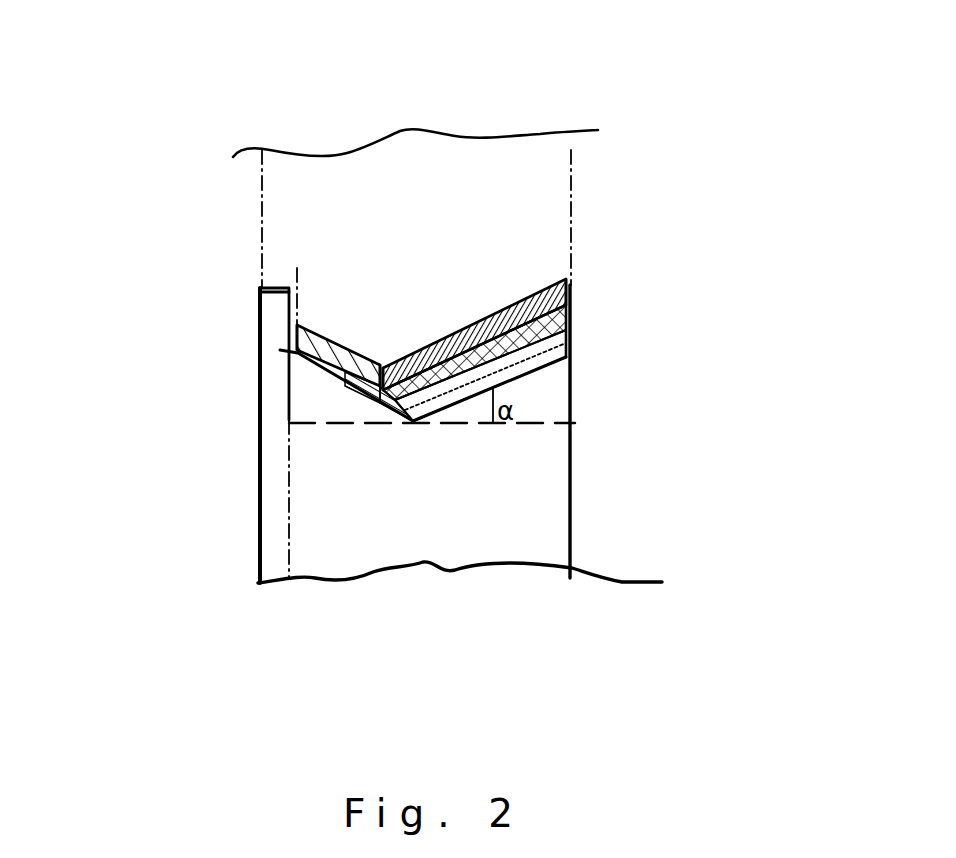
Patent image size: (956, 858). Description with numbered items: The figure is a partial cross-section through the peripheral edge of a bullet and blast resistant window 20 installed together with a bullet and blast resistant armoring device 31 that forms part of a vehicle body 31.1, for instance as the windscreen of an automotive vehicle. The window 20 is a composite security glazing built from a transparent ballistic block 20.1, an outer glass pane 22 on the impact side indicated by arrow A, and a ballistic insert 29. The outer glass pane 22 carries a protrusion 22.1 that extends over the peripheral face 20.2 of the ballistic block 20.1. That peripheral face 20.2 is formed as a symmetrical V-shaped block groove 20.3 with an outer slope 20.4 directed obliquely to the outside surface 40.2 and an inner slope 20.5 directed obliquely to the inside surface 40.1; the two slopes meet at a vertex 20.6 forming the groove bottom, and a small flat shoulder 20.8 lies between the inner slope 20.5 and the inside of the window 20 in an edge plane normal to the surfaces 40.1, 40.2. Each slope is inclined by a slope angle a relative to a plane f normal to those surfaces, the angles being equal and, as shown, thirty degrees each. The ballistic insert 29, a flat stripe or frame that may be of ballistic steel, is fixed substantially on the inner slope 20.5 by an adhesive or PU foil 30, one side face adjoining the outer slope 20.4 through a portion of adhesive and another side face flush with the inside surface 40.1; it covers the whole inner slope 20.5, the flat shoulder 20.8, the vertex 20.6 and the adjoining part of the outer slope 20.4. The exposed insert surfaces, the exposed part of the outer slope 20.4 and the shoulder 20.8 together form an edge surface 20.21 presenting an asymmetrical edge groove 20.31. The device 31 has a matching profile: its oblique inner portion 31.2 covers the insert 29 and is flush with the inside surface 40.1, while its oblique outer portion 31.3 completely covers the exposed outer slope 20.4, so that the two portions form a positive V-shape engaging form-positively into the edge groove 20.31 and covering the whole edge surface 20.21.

The bullet and blast resistant window 20 is at (318, 505).
The ballistic block 20.1 is at (515, 540).
The peripheral face 20.2 is at (527, 392).
The block groove 20.3 is at (417, 398).
The outer slope 20.4 is at (345, 395).
The inner slope 20.5 is at (472, 412).
The vertex 20.6 is at (408, 440).
The flat shoulder 20.8 is at (567, 331).
The edge surface 20.21 is at (485, 335).
The edge groove 20.31 is at (453, 337).
The outer glass pane 22 is at (273, 432).
The protrusion 22.1 is at (270, 313).
The ballistic insert 29 is at (567, 356).
The PU foil 30 is at (432, 405).
The bullet and blast resistant armoring device 31 is at (487, 198).
The vehicle body 31.1 is at (420, 158).
The oblique inner portion 31.2 is at (509, 318).
The oblique outer portion 31.3 is at (340, 348).
The inside surface 40.1 is at (585, 543).
The outside surface 40.2 is at (245, 565).
The slope angle a is at (308, 390).
The plane f is at (590, 442).
The arrow indicating impact side A is at (172, 470).